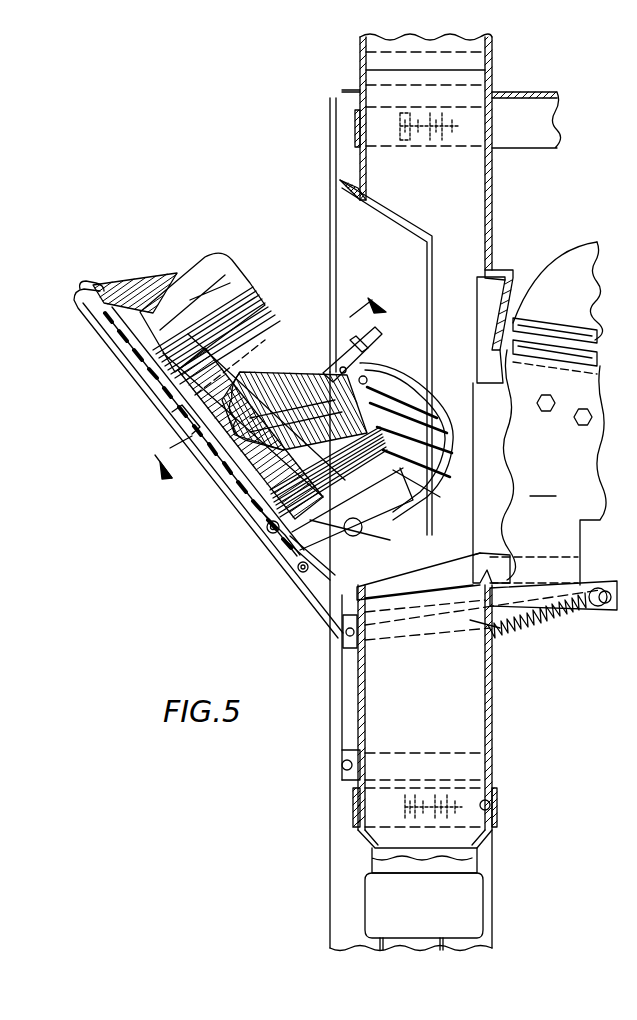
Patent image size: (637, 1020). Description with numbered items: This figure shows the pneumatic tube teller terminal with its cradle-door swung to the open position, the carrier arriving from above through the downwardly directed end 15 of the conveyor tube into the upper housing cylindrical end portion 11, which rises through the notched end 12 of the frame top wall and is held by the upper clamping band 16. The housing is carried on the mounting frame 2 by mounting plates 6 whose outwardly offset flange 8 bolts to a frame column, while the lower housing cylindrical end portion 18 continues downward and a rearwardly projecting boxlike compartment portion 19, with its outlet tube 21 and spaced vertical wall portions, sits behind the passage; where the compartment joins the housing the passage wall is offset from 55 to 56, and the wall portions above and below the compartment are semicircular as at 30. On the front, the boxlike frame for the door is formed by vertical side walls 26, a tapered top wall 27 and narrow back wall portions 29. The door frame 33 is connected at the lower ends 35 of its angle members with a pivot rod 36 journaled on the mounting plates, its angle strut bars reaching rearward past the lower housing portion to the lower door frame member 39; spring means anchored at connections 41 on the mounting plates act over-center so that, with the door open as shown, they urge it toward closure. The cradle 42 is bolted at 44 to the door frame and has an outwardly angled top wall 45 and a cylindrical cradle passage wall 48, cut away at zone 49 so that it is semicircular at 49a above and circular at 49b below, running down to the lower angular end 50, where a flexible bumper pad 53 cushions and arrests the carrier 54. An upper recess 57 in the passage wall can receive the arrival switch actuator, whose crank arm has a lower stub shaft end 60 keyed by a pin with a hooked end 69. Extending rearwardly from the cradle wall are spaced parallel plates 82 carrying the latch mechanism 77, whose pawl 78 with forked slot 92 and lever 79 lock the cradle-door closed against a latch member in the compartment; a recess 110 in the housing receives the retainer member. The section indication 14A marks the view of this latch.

The mounting frame 2 is at (328, 890).
The mounting plates 6 is at (340, 724).
The outwardly offset flange 8 is at (470, 752).
The upper housing cylindrical end portion 11 is at (492, 200).
The notched end 12 is at (494, 96).
The section view indication 14A is at (266, 376).
The downwardly directed end of the conveyor tube 15 is at (393, 60).
The upper clamping band 16 is at (357, 125).
The lower housing cylindrical end portion 18 is at (490, 805).
The boxlike compartment portion 19 is at (575, 462).
The tube 21 is at (590, 291).
The vertical side walls 26 is at (365, 240).
The top wall 27 is at (350, 188).
The back wall portions 29 is at (435, 256).
The semicircular housing wall portions 30 is at (465, 257).
The door frame 33 is at (80, 326).
The lower ends of angle members 35 is at (350, 603).
The pivot rod 36 is at (350, 640).
The lower door frame member 39 is at (599, 606).
The spring connections 41 is at (478, 650).
The cradle 42 is at (133, 272).
The bolted connections 44 is at (300, 569).
The top wall 45 is at (88, 282).
The cylindrical cradle passage wall 48 is at (350, 418).
The cut-away zone 49 is at (272, 378).
The semicircular upper cradle wall portion 49a is at (262, 330).
The circular cradle passage wall portion 49b is at (305, 368).
The lower angular end 50 is at (383, 505).
The flexible bumper pad 53 is at (360, 533).
The carrier 54 is at (240, 262).
The offset 55 is at (448, 378).
The offset 56 is at (452, 565).
The upper recess 57 is at (131, 345).
The lower stub shaft end 60 is at (217, 452).
The hooked end 69 is at (268, 529).
The latch mechanism 77 is at (440, 395).
The pawl 78 is at (373, 335).
The lever 79 is at (440, 470).
The spaced parallel plates 82 is at (448, 430).
The forked slot 92 is at (372, 352).
The recess 110 is at (490, 292).